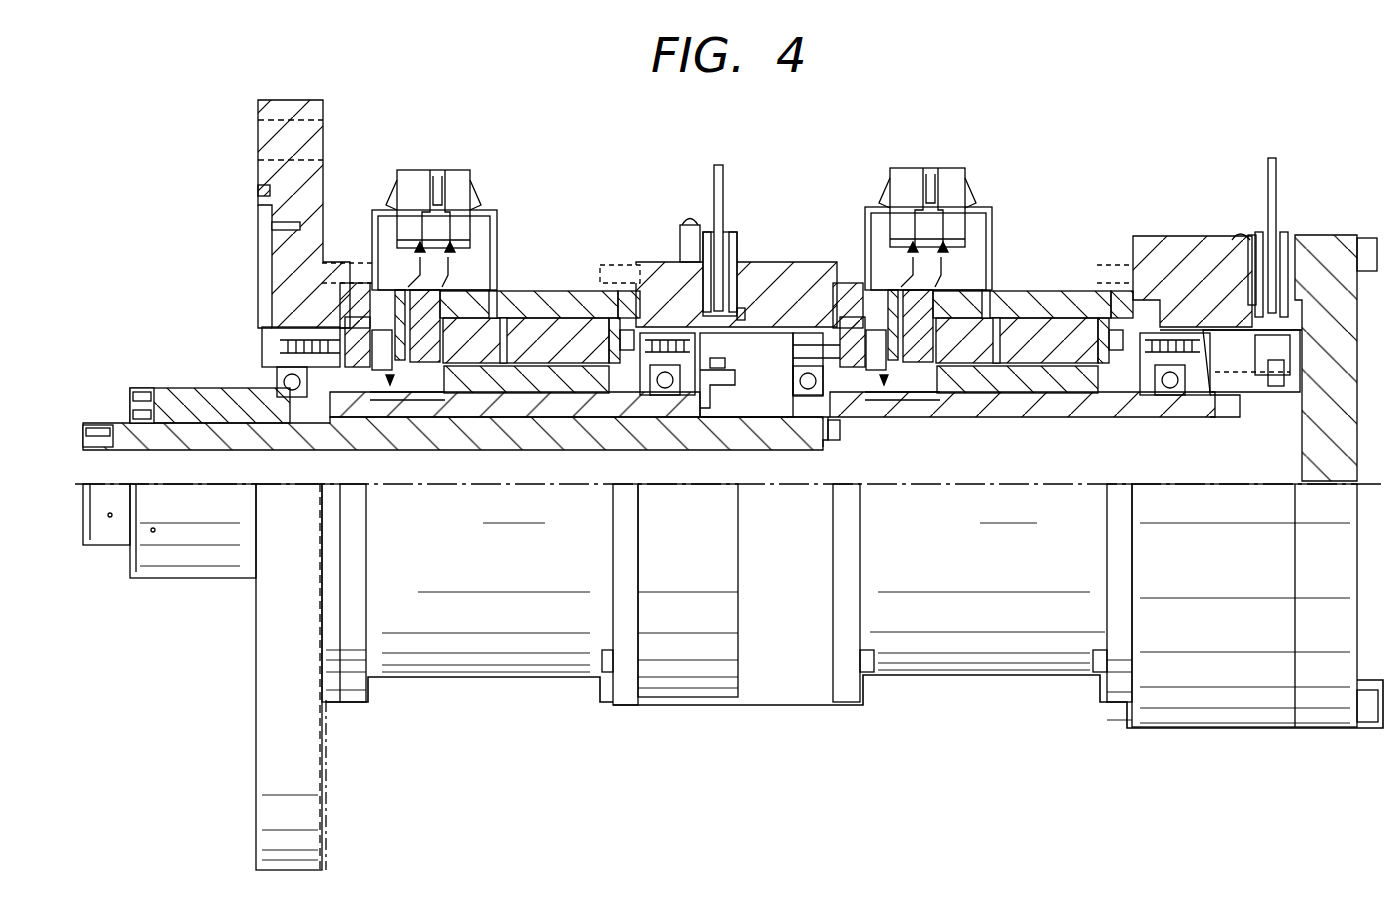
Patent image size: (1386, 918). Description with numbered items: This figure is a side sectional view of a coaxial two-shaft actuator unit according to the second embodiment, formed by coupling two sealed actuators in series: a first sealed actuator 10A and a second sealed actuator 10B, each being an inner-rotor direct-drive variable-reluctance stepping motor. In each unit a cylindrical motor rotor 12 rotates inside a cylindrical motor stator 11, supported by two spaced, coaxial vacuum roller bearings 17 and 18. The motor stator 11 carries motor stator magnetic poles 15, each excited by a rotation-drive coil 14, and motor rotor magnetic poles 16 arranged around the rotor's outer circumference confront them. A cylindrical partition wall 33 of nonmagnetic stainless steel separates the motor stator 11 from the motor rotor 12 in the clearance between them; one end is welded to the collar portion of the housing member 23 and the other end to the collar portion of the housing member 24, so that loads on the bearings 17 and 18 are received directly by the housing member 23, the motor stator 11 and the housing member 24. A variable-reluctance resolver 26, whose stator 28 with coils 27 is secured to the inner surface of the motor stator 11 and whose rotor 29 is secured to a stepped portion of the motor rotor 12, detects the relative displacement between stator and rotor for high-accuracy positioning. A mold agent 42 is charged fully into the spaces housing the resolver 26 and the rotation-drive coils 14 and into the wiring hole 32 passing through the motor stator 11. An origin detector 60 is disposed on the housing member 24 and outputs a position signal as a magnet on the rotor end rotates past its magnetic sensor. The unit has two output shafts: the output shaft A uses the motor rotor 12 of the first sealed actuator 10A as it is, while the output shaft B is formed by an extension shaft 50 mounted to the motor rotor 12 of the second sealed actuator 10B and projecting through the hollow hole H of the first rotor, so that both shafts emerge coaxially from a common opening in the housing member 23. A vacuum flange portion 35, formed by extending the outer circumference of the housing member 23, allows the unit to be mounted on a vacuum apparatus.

The first sealed actuator 10A is at (550, 290).
The second sealed actuator 10B is at (1042, 290).
The motor stator 11 is at (530, 310).
The motor rotor 12 is at (588, 405).
The rotation-drive coil 14 is at (616, 330).
The motor stator magnetic pole 15 is at (558, 345).
The motor rotor magnetic pole 16 is at (555, 385).
The vacuum roller bearing 17 is at (300, 400).
The vacuum roller bearing 18 is at (660, 400).
The housing member 23 is at (315, 230).
The housing member 24 is at (663, 268).
The variable-reluctance resolver 26 is at (392, 390).
The coils 27 is at (420, 398).
The stator 28 is at (358, 370).
The rotor 29 is at (384, 380).
The wiring hole 32 is at (450, 318).
The partition wall 33 is at (492, 340).
The vacuum flange portion 35 is at (310, 805).
The mold agent 42 is at (360, 300).
The extension shaft 50 is at (230, 520).
The origin detector 60 is at (725, 222).
The output shaft A is at (140, 388).
The output shaft B is at (90, 425).
The hollow hole H is at (992, 470).